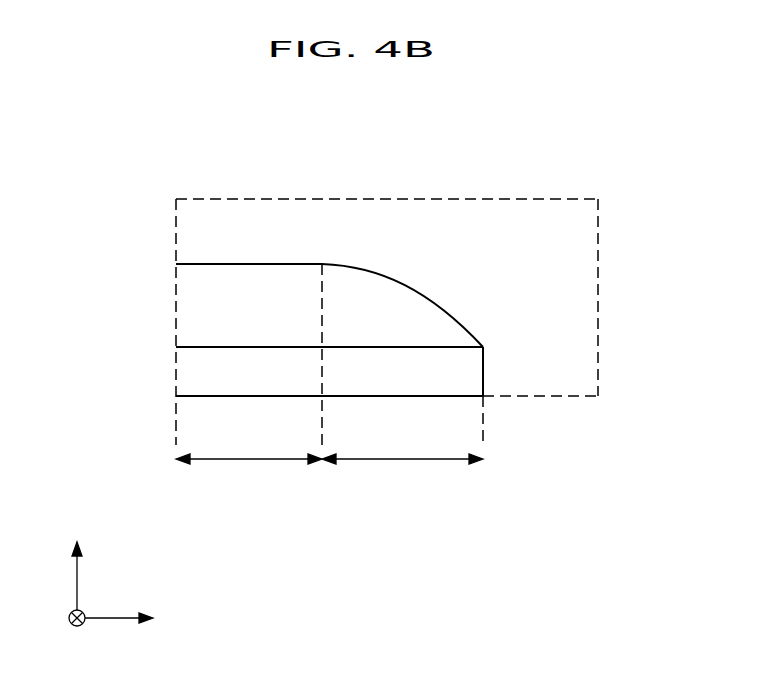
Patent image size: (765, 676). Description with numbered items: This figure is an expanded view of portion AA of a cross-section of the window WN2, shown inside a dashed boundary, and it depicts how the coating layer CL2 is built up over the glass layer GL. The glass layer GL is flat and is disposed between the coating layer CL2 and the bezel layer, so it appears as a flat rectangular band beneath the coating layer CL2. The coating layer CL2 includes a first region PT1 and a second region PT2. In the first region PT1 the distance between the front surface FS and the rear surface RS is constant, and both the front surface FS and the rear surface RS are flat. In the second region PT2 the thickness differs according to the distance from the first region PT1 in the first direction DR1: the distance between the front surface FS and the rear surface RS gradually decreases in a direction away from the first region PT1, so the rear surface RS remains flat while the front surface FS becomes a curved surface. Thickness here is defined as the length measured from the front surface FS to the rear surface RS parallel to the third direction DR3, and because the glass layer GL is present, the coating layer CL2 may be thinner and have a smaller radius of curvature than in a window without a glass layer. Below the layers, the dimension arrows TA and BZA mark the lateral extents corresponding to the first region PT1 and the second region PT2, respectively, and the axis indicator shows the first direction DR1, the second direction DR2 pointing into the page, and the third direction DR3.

The portion AA is at (598, 251).
The front surface FS is at (203, 264).
The rear surface RS is at (203, 397).
The coating layer CL2 is at (425, 313).
The glass layer GL is at (470, 370).
The first region PT1 is at (222, 307).
The second region PT2 is at (356, 354).
The transmission area TA is at (249, 472).
The bezel area BZA is at (402, 443).
The first direction DR1 is at (143, 619).
The second direction DR2 is at (80, 633).
The third direction DR3 is at (80, 563).